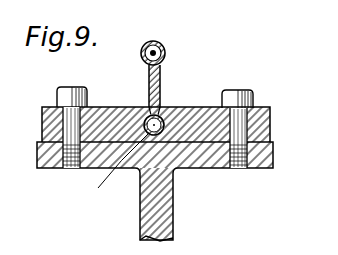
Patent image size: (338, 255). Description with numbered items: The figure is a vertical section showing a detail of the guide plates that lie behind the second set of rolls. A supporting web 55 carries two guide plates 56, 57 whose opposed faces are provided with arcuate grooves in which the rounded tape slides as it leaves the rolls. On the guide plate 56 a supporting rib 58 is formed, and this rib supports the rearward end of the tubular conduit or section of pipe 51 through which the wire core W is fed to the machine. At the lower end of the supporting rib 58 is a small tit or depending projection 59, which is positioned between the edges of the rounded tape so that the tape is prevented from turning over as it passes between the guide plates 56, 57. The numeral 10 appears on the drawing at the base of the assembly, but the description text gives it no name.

The base plate 10 is at (273, 170).
The section of pipe 51 is at (153, 42).
The supporting web 55 is at (157, 217).
The guide plate 56 is at (100, 117).
The guide plate 57 is at (192, 120).
The supporting rib 58 is at (163, 82).
The tit or depending projection 59 is at (162, 108).
The wire core W is at (166, 51).